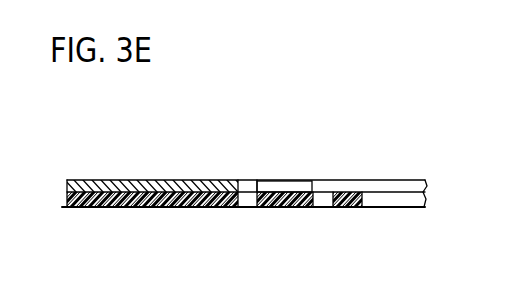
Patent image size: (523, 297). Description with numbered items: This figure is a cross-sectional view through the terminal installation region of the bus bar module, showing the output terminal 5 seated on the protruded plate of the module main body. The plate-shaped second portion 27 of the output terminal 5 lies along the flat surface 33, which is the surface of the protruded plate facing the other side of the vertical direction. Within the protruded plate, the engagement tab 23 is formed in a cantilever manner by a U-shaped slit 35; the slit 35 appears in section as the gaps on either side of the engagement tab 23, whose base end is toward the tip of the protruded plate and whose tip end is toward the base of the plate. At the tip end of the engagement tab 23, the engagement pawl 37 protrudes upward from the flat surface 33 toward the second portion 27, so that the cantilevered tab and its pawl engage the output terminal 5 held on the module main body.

The output terminal 5 is at (143, 179).
The flat surface 33 is at (107, 185).
The second portion 27 is at (197, 179).
The engagement pawl 37 is at (297, 181).
The engagement tab 23 is at (293, 207).
The U-shaped slit 35 is at (247, 207).